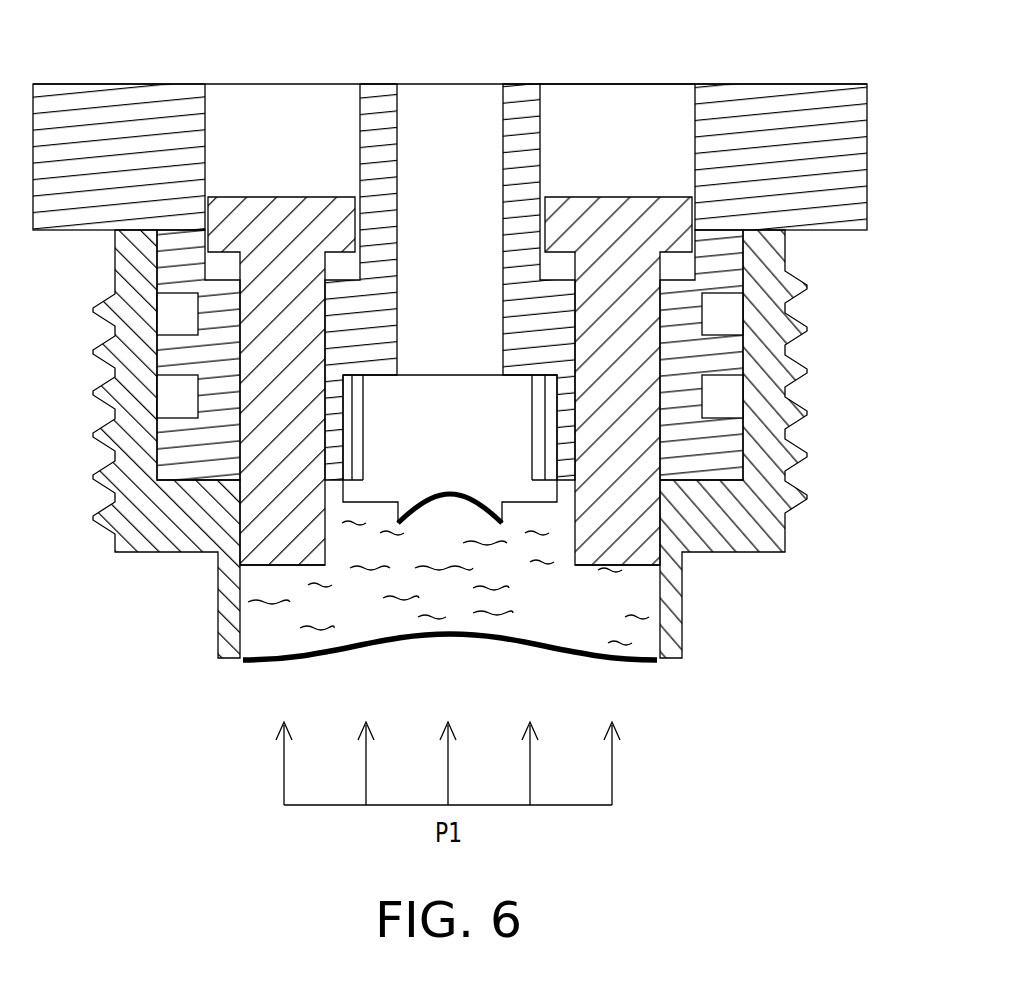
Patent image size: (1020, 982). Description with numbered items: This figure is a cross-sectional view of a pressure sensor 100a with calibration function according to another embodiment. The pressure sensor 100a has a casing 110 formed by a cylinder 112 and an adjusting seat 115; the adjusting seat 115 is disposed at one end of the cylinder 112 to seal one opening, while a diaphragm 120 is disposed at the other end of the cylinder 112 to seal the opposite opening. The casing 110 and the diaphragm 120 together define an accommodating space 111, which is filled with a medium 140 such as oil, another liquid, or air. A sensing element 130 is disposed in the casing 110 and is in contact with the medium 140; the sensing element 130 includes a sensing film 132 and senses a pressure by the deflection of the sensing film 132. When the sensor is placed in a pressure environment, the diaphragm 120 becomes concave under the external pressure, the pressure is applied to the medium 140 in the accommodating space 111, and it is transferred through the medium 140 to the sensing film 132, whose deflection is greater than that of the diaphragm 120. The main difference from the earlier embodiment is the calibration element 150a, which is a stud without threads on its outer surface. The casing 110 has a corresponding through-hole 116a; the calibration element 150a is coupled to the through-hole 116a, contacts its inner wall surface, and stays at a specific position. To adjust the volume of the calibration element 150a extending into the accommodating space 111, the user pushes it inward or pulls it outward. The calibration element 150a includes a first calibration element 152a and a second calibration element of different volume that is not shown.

The pressure sensor 100a is at (878, 845).
The casing 110 is at (450, 282).
The accommodating space 111 is at (590, 612).
The cylinder 112 is at (772, 372).
The adjusting seat 115 is at (797, 92).
The through-hole 116a is at (664, 115).
The diaphragm 120 is at (452, 638).
The sensing element 130 is at (395, 470).
The sensing film 132 is at (477, 505).
The medium 140 is at (357, 602).
The calibration element 150a is at (450, 381).
The first calibration element 152a is at (627, 560).